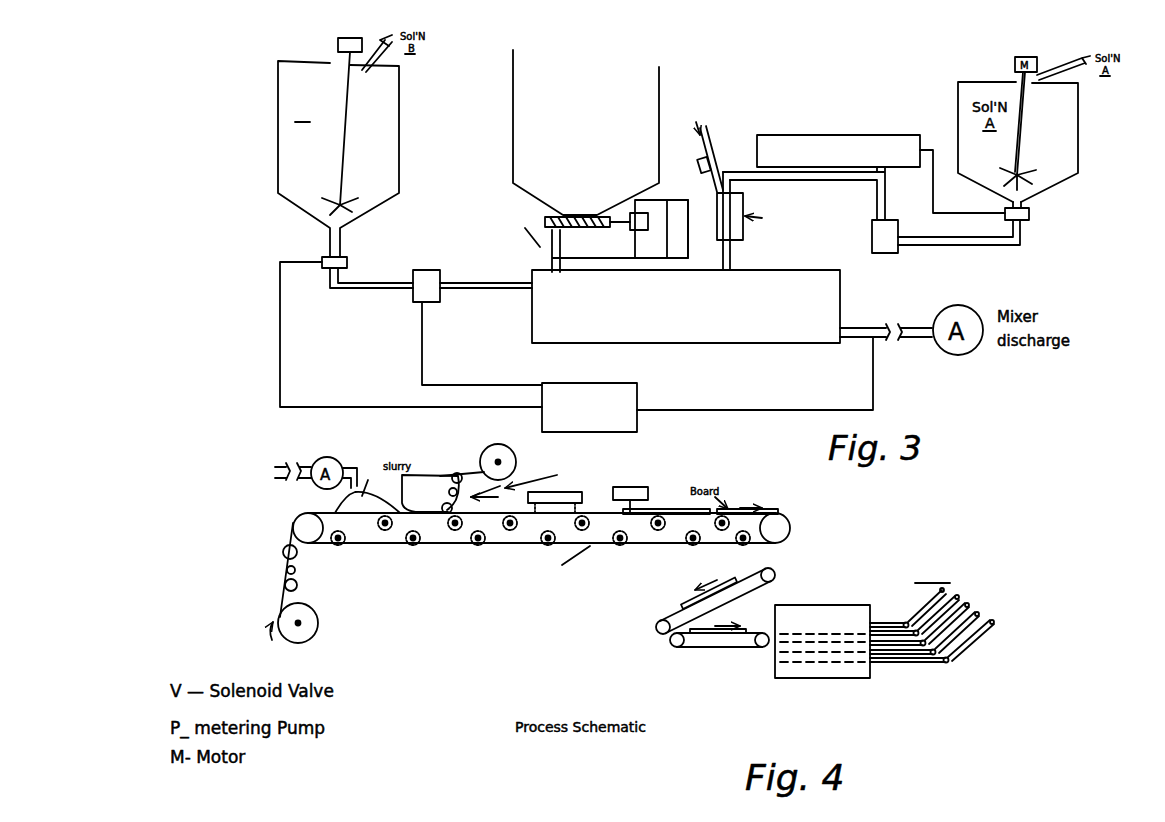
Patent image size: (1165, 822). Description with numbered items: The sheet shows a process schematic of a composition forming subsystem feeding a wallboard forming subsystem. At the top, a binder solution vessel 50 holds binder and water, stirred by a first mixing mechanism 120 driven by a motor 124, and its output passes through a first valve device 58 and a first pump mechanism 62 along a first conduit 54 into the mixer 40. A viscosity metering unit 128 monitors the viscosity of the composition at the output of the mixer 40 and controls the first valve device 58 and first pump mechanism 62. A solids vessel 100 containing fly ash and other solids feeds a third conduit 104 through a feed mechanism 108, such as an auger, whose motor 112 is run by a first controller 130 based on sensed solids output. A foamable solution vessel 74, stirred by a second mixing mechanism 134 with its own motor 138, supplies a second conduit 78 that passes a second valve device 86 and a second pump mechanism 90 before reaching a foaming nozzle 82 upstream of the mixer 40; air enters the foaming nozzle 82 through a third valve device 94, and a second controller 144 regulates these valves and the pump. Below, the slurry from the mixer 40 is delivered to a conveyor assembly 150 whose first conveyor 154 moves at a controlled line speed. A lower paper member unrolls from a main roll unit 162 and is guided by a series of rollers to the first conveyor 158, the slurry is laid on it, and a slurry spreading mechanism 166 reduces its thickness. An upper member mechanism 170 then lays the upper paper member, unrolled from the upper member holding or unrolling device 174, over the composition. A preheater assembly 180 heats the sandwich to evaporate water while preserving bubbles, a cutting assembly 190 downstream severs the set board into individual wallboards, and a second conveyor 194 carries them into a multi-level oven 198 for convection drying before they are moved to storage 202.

In FIG. 3, the mixer 40 is at (763, 343).
In FIG. 3, the binder solution vessel 50 is at (280, 160).
In FIG. 3, the first conduit 54 is at (360, 290).
In FIG. 3, the first valve device 58 is at (350, 262).
In FIG. 3, the first pump mechanism 62 is at (433, 272).
In FIG. 3, the foamable solution vessel 74 is at (958, 125).
In FIG. 3, the second conduit 78 is at (955, 248).
In FIG. 3, the foaming nozzle 82 is at (745, 206).
In FIG. 3, the second valve device 86 is at (1032, 210).
In FIG. 3, the second pump mechanism 90 is at (885, 253).
In FIG. 3, the third valve device 94 is at (718, 160).
In FIG. 3, the solids vessel 100 is at (655, 90).
In FIG. 3, the third conduit 104 is at (553, 232).
In FIG. 3, the feed mechanism 108 is at (560, 230).
In FIG. 3, the motor 112 is at (655, 240).
In FIG. 3, the first mixing mechanism 120 is at (340, 142).
In FIG. 3, the motor 124 is at (338, 42).
In FIG. 3, the viscosity metering unit 128 is at (637, 398).
In FIG. 3, the first controller 130 is at (690, 240).
In FIG. 3, the second mixing mechanism 134 is at (1030, 134).
In FIG. 3, the motor 138 is at (1020, 57).
In FIG. 3, the second controller 144 is at (820, 135).
In FIG. 4, the conveyor assembly 150 is at (221, 583).
In FIG. 4, the first conveyor 154 is at (541, 570).
In FIG. 4, the first conveyor 158 is at (430, 545).
In FIG. 4, the main roll unit 162 is at (318, 623).
In FIG. 4, the slurry spreading mechanism 166 is at (428, 448).
In FIG. 4, the upper member mechanism 170 is at (530, 489).
In FIG. 4, the upper member holding or unrolling device 174 is at (516, 456).
In FIG. 4, the preheater assembly 180 is at (585, 497).
In FIG. 4, the cutting assembly 190 is at (648, 492).
In FIG. 4, the second conveyor 194 is at (778, 588).
In FIG. 4, the multi-level oven 198 is at (837, 678).
In FIG. 4, the storage 202 is at (960, 590).